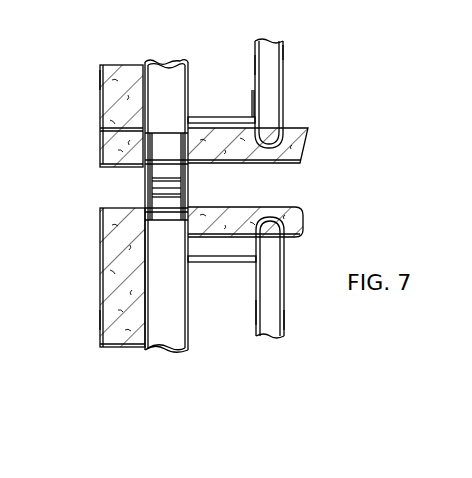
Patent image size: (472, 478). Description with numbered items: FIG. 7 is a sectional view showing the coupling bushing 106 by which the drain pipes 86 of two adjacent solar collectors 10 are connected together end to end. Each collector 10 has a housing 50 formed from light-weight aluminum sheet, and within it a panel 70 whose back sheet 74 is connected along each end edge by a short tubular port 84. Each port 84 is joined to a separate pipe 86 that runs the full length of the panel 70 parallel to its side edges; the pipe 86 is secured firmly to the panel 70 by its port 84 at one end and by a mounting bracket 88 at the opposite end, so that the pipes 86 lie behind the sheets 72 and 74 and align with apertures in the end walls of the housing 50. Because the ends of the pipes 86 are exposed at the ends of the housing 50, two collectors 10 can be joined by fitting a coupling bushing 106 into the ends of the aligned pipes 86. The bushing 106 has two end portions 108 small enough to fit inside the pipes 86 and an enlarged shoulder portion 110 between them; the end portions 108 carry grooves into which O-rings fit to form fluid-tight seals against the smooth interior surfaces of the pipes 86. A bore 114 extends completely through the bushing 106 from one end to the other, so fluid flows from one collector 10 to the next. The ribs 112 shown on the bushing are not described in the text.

The collector 10 is at (100, 81).
The housing 50 is at (100, 108).
The panel 70 is at (284, 50).
The sheet 72 is at (283, 100).
The back sheet 74 is at (255, 63).
The tubular port 84 is at (222, 262).
The pipe 86 is at (166, 72).
The mounting bracket 88 is at (222, 117).
The coupling bushing 106 is at (190, 190).
The end portion 108 is at (150, 162).
The enlarged shoulder portion 110 is at (190, 180).
The ribs 112 is at (146, 172).
The bore 114 is at (100, 130).